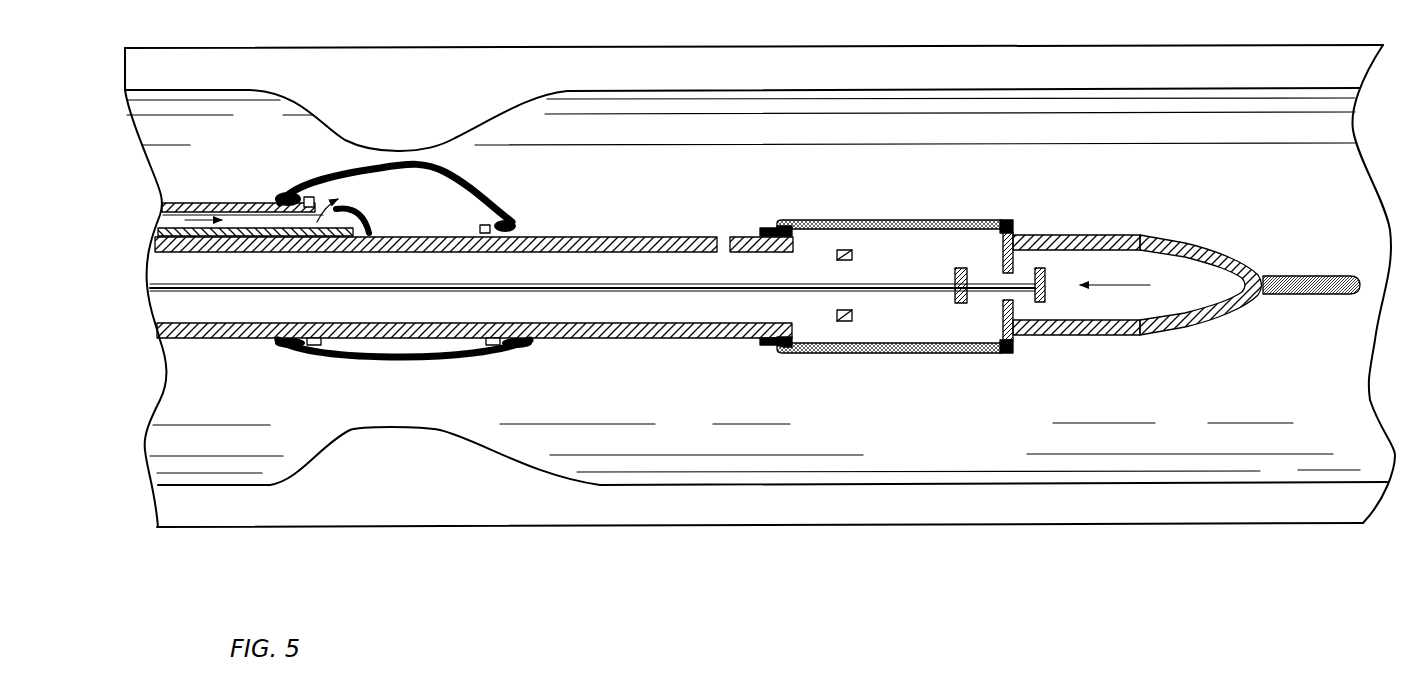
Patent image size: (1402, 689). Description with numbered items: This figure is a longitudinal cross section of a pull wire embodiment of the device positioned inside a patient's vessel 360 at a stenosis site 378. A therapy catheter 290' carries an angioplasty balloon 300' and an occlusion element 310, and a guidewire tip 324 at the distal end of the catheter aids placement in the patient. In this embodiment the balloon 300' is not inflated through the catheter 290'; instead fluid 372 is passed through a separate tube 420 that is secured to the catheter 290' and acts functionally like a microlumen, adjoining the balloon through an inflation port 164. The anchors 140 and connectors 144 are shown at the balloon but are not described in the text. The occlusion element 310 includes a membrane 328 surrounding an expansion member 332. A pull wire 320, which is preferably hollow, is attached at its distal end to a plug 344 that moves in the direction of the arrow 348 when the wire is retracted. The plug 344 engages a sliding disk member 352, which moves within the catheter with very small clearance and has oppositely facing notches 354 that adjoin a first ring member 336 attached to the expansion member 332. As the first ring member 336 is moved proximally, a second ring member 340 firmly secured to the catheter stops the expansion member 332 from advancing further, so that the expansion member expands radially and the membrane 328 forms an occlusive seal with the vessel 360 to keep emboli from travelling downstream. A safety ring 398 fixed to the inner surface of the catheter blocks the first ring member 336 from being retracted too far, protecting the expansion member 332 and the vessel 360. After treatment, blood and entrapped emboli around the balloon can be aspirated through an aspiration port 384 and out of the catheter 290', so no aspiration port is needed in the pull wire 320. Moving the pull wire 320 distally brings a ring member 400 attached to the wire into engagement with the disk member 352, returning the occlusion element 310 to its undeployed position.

The vessel 360 is at (835, 50).
The stenosis site 378 is at (413, 500).
The pull wire 320 is at (165, 293).
The fluid 372 is at (168, 208).
The tube 420 is at (197, 205).
The therapy catheter 290' is at (438, 309).
The aspiration port 384 is at (722, 235).
The inflation port 164 is at (325, 198).
The angioplasty balloon 300' is at (371, 245).
The anchors 140 is at (287, 190).
The connectors 144 is at (484, 222).
The second ring member 340 is at (757, 230).
The membrane 328 is at (803, 355).
The expansion member 332 is at (912, 355).
The safety ring 398 is at (855, 250).
The first ring member 336 is at (1013, 232).
The ring member 400 is at (958, 305).
The plug 344 is at (1045, 268).
The notches 354 is at (1043, 235).
The sliding disk member 352 is at (1017, 305).
The arrow 348 is at (1153, 240).
The guidewire tip 324 is at (1320, 297).
The occlusion element 310 is at (952, 400).